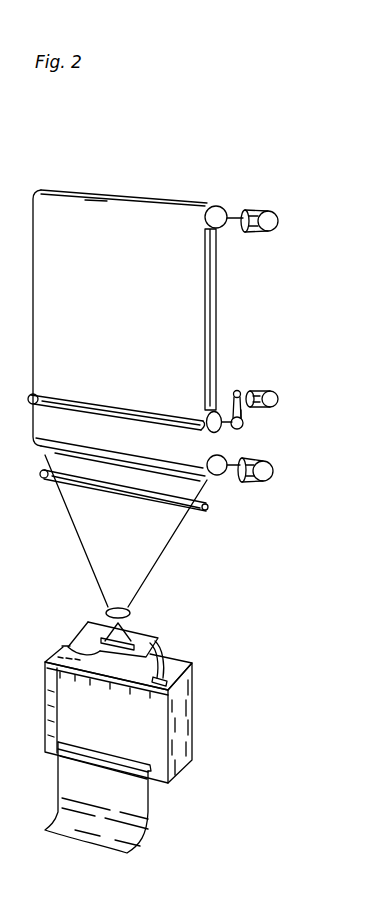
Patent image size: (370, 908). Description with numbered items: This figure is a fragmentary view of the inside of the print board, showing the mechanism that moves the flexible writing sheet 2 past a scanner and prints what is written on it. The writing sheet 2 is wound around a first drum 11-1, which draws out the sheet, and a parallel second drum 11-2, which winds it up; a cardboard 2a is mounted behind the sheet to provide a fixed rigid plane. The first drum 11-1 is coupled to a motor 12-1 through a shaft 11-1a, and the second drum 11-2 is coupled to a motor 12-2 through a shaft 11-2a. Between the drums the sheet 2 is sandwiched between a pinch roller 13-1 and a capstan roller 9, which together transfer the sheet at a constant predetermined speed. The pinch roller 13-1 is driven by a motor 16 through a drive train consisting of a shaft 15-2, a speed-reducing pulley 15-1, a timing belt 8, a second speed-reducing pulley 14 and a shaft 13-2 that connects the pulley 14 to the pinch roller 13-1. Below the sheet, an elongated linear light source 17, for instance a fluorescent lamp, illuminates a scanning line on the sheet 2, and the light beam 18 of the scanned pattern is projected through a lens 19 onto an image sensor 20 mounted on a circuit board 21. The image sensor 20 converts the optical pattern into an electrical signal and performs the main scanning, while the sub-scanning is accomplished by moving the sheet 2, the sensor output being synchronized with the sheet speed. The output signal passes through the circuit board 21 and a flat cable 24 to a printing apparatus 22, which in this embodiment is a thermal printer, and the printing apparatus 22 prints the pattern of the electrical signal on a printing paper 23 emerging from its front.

The flexible writing sheet 2 is at (200, 282).
The cardboard 2a is at (218, 245).
The timing belt 8 is at (243, 412).
The roller 9 is at (32, 393).
The first drum 11-1 is at (216, 207).
The shaft 11-1a is at (238, 214).
The second drum 11-2 is at (220, 475).
The shaft 11-2a is at (237, 481).
The motor 12-1 is at (277, 218).
The motor 12-2 is at (267, 484).
The pinch roller 13-1 is at (215, 411).
The shaft 13-2 is at (228, 424).
The pulley 14 is at (243, 431).
The pulley 15-1 is at (240, 390).
The shaft 15-2 is at (259, 385).
The motor 16 is at (278, 398).
The elongated linear light source 17 is at (70, 488).
The light beam 18 is at (171, 535).
The lens 19 is at (131, 612).
The image sensor 20 is at (62, 646).
The circuit board 21 is at (92, 632).
The printing apparatus 22 is at (187, 712).
The printing paper 23 is at (142, 817).
The flat cable 24 is at (164, 646).